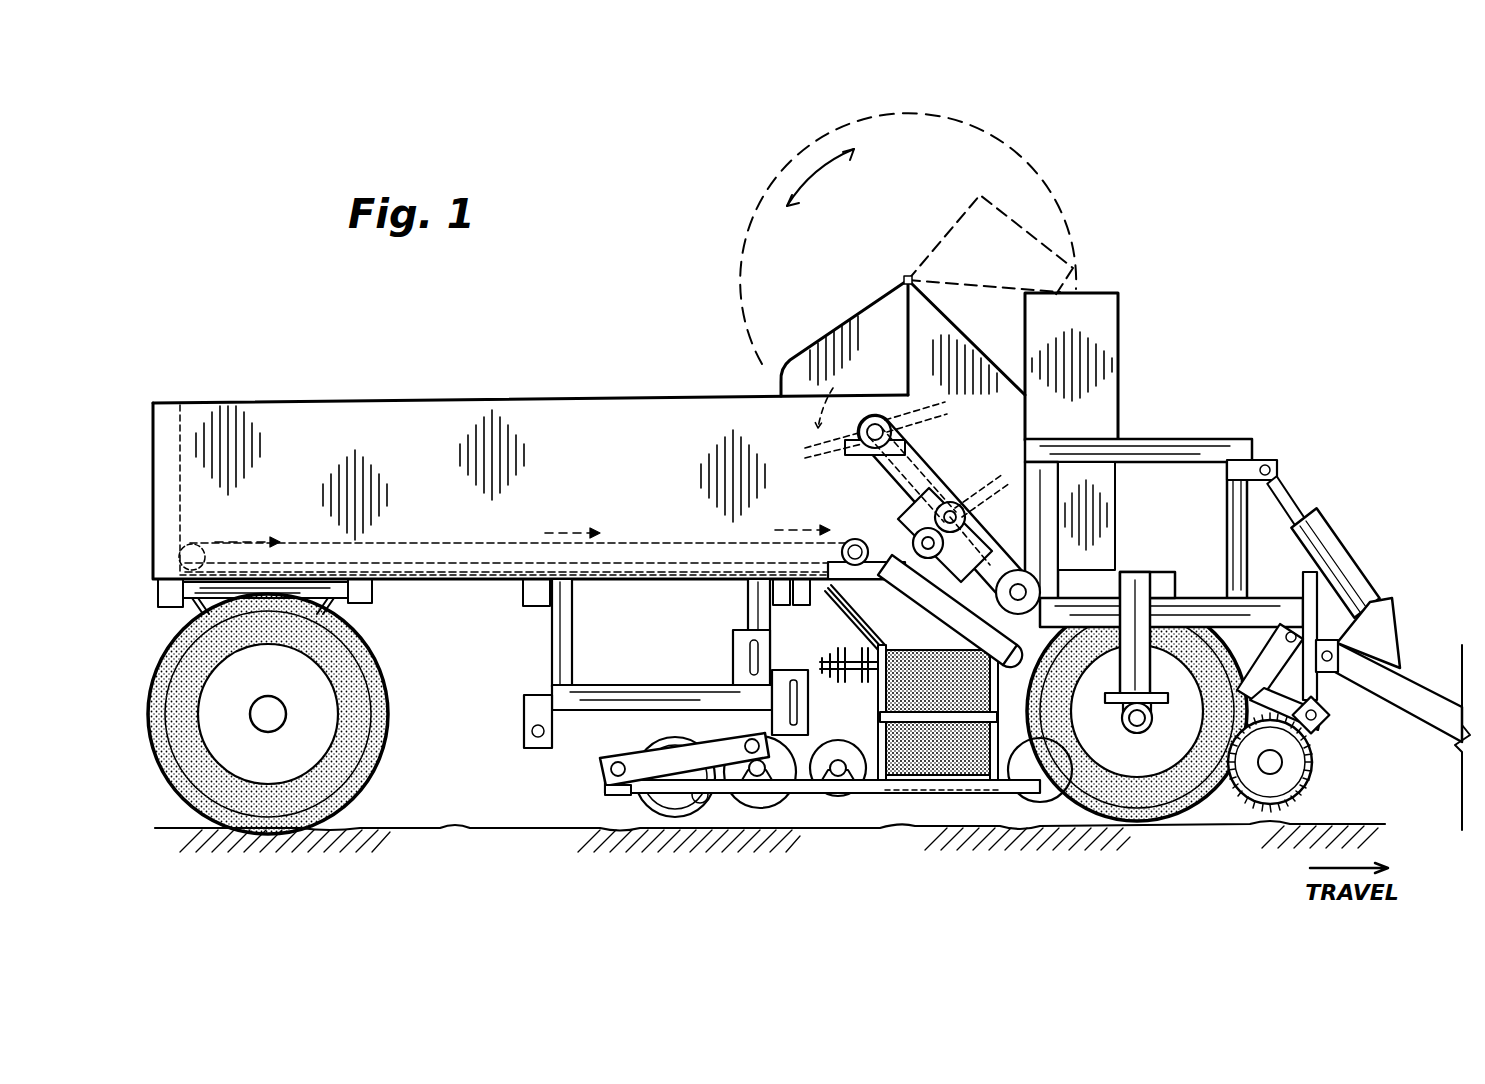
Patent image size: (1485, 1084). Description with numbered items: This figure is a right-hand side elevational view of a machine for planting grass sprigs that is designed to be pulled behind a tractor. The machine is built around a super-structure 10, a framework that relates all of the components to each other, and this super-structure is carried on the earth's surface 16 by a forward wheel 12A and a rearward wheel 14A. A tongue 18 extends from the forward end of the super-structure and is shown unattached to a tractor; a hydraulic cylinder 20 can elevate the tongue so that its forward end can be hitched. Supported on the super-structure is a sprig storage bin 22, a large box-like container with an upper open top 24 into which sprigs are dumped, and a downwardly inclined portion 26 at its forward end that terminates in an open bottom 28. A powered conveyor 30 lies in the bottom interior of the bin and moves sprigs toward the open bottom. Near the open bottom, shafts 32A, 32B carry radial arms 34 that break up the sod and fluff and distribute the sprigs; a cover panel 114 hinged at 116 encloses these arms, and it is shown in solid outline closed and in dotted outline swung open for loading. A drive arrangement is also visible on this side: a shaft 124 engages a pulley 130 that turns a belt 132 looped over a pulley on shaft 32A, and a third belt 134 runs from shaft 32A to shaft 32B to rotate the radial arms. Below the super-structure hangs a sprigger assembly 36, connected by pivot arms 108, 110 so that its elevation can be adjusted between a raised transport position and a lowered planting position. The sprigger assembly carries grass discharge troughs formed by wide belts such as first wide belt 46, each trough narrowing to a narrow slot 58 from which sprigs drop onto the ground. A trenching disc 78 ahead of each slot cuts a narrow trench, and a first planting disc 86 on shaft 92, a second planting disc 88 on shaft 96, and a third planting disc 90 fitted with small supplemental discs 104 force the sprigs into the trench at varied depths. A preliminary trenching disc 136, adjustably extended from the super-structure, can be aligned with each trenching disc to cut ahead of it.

The super-structure 10 is at (1191, 347).
The forward wheel 12A is at (1160, 800).
The rearward wheel 14A is at (258, 812).
The earth's surface 16 is at (468, 827).
The tongue 18 is at (1413, 690).
The hydraulic cylinder 20 is at (1327, 535).
The sprig storage bin 22 is at (470, 405).
The upper open top 24 is at (618, 397).
The downwardly inclined portion 26 is at (937, 585).
The open bottom 28 is at (960, 622).
The conveyor 30 is at (447, 545).
The shaft 32A is at (955, 503).
The shaft 32B is at (895, 435).
The radial arms 34 is at (927, 410).
The sprigger assembly 36 is at (722, 667).
The first wide belt 46 is at (970, 770).
The narrow slot 58 is at (930, 790).
The trenching disc 78 is at (1040, 800).
The first planting disc 86 is at (838, 778).
The second planting disc 88 is at (760, 800).
The third planting disc 90 is at (700, 803).
The shaft 92 is at (843, 778).
The shaft 96 is at (764, 766).
The supplemental discs 104 is at (638, 758).
The pivot arm 108 is at (1272, 665).
The pivot arm 110 is at (637, 765).
The cover panel 114 is at (845, 333).
The hinge 116 is at (905, 277).
The shaft 124 is at (1022, 592).
The pulley 130 is at (1005, 572).
The belt 132 is at (1000, 550).
The third belt 134 is at (902, 480).
The preliminary trenching disc 136 is at (1292, 766).